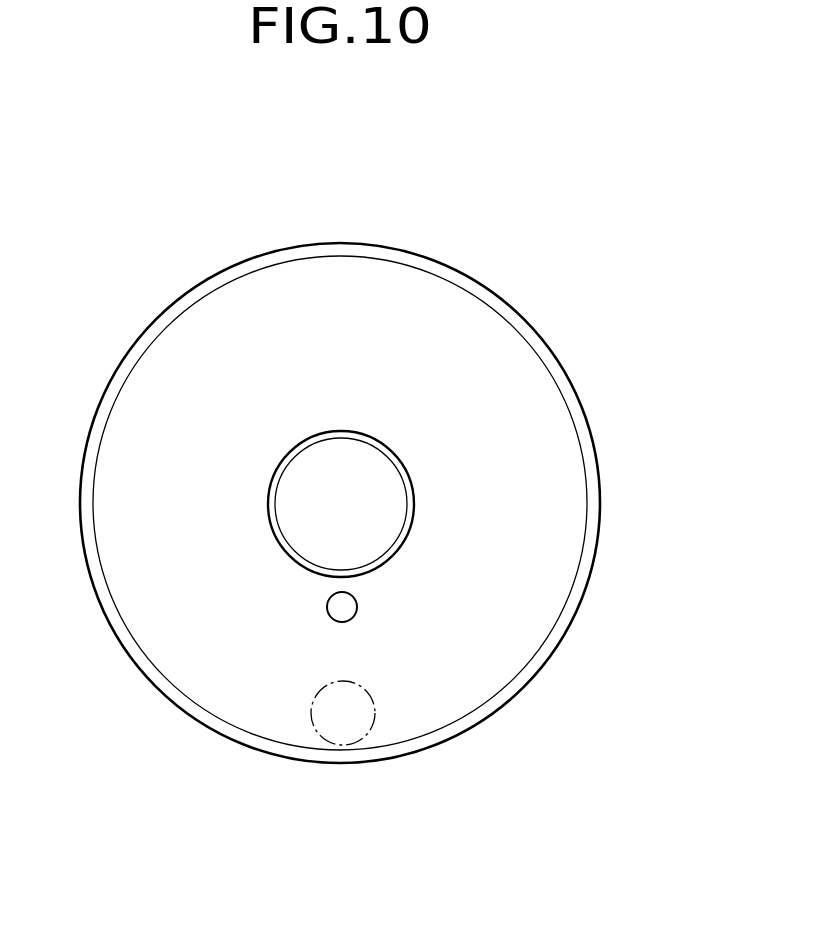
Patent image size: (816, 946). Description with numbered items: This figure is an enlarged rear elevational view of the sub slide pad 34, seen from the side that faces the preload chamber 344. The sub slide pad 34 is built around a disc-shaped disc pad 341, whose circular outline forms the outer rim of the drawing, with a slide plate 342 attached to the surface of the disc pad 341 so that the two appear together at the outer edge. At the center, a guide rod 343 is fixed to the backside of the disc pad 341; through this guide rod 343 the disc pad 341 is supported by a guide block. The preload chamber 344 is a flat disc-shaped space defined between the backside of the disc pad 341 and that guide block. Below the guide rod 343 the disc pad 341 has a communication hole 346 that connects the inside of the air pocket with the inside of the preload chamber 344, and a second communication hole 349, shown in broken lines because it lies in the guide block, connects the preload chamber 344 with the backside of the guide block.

The sub slide pad 34 is at (355, 490).
The disc pad 341 is at (517, 310).
The slide plate 342 is at (367, 500).
The guide rod 343 is at (285, 453).
The preload chamber 344 is at (550, 434).
The communication hole 346 is at (333, 597).
The communication hole 349 is at (372, 723).